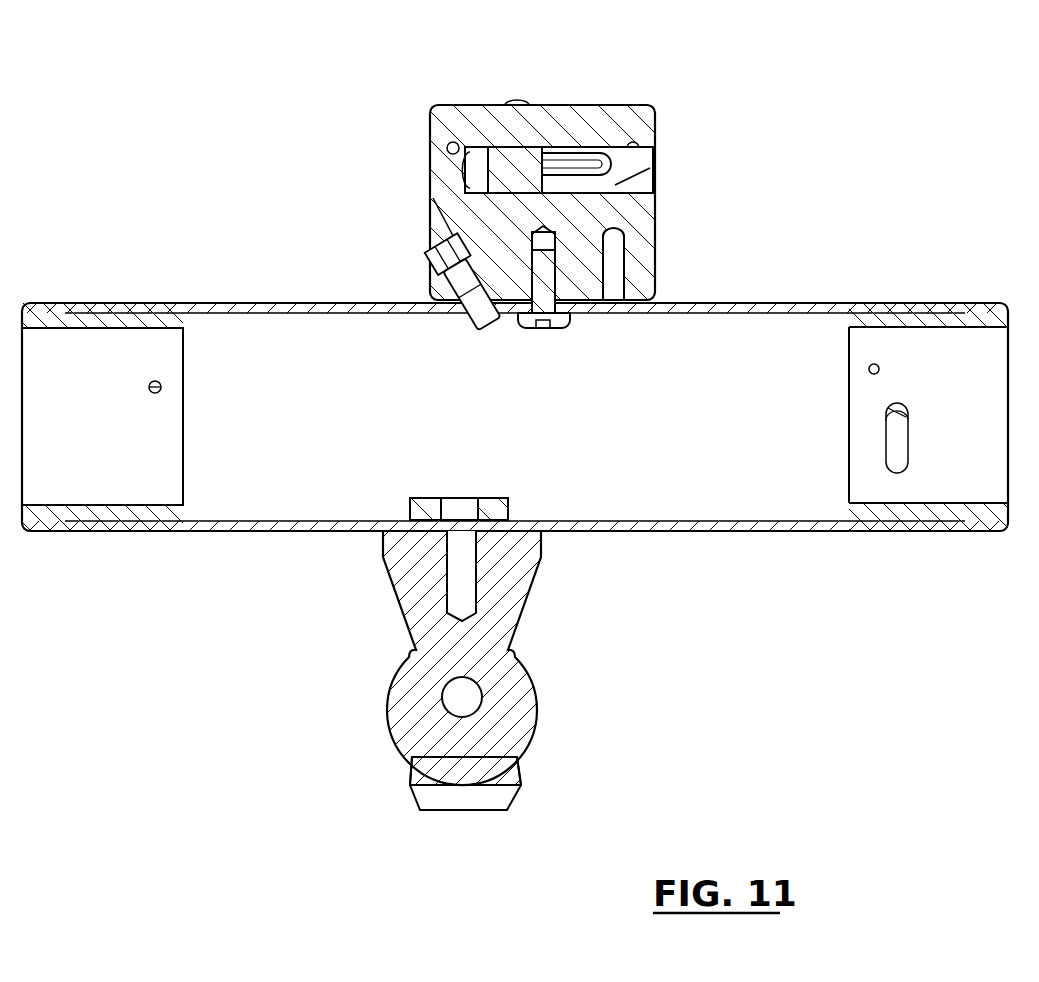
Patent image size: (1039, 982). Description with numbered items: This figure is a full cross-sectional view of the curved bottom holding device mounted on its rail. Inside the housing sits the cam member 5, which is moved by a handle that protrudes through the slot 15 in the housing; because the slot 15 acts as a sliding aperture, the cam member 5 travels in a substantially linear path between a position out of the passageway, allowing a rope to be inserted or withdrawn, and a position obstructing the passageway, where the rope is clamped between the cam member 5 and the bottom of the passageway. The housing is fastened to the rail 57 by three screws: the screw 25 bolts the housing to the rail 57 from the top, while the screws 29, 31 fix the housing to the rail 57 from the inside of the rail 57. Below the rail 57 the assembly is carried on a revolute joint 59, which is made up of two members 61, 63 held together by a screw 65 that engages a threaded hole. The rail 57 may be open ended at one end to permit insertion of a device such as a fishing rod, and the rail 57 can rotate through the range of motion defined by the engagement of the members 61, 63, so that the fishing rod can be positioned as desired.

The cam member 5 is at (432, 182).
The slot 15 is at (583, 147).
The screw 25 is at (427, 261).
The screw 29 is at (612, 305).
The screw 31 is at (568, 316).
The rail 57 is at (708, 531).
The revolute joint 59 is at (521, 658).
The member 61 is at (532, 725).
The member 63 is at (405, 795).
The screw 65 is at (468, 500).